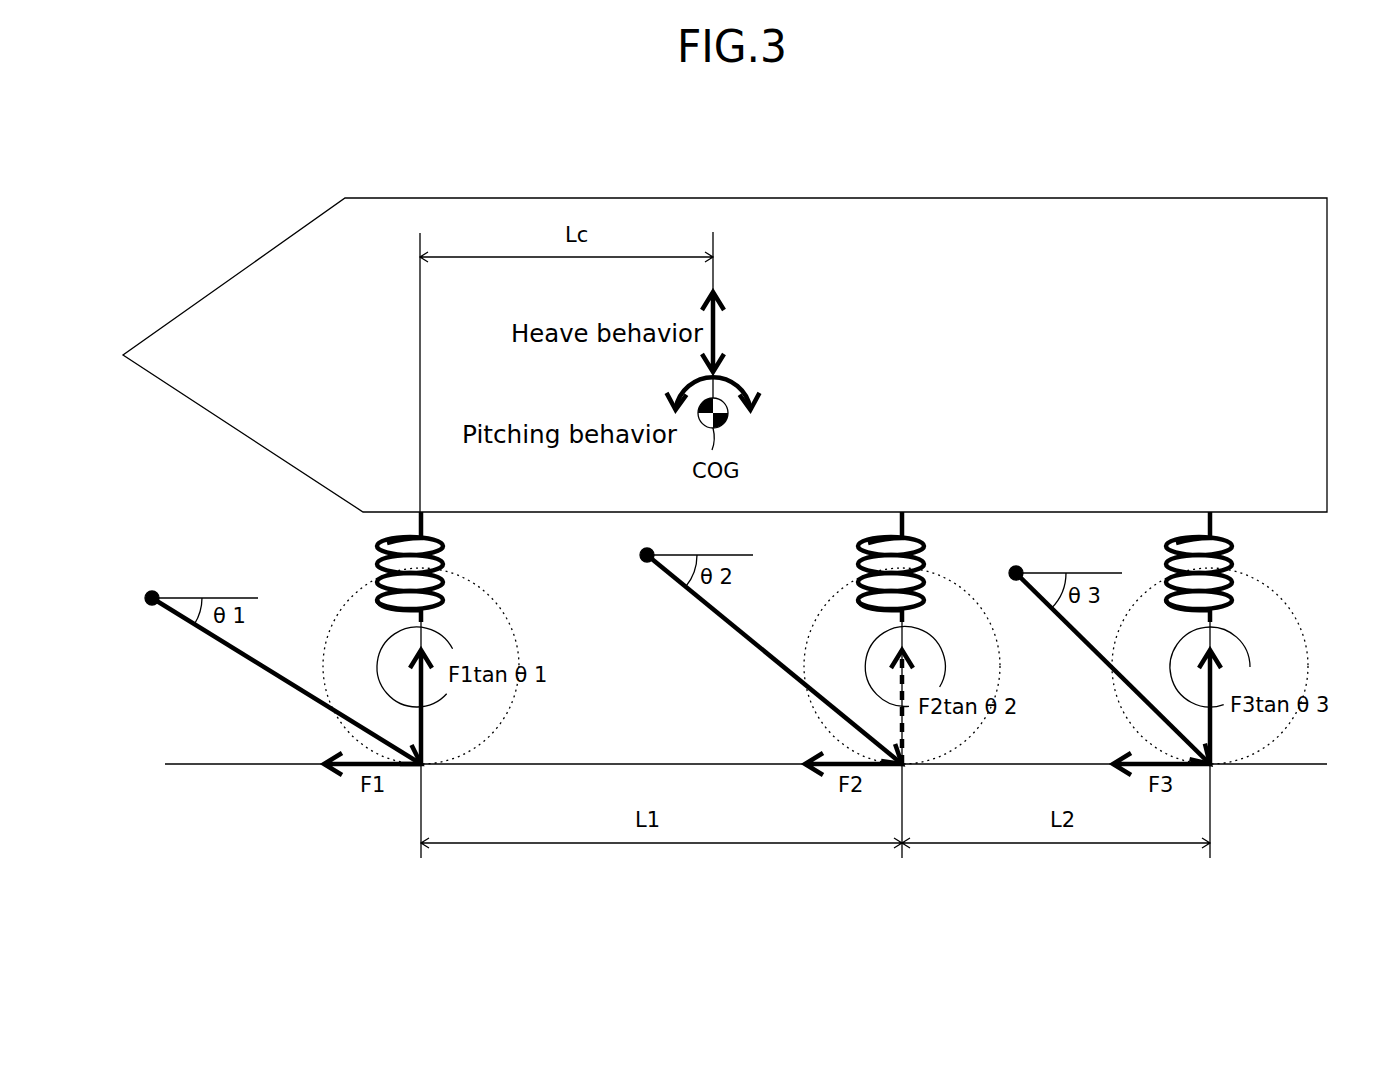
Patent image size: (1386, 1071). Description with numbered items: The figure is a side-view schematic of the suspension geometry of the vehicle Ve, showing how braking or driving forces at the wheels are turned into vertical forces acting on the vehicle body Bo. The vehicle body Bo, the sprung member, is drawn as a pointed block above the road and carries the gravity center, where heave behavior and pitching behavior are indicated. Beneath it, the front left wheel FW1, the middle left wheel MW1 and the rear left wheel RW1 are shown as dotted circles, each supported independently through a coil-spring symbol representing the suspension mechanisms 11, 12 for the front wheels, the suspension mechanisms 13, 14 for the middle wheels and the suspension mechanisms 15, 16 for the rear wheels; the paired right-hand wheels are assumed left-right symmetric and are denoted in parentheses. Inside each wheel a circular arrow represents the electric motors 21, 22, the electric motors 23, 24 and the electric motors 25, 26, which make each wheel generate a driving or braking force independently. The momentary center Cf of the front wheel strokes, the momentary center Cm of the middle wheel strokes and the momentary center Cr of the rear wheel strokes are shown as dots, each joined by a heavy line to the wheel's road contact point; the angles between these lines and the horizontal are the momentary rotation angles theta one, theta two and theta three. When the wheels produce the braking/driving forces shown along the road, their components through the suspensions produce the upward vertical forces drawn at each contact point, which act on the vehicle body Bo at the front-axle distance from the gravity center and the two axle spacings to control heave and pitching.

The vehicle Ve is at (196, 97).
The vehicle body Bo is at (1233, 198).
The momentary center of strokes of the front wheels Cf is at (160, 592).
The momentary center of strokes of the middle wheels Cm is at (655, 549).
The momentary center of strokes of the rear wheels Cr is at (1024, 567).
The suspension mechanism 11 is at (375, 557).
The suspension mechanism 12 is at (350, 567).
The suspension mechanism 13 is at (925, 556).
The suspension mechanism 14 is at (925, 567).
The suspension mechanism 15 is at (1233, 553).
The suspension mechanism 16 is at (1235, 567).
The electric motor 21 is at (457, 650).
The electric motor 22 is at (443, 625).
The electric motor 23 is at (867, 642).
The electric motor 24 is at (864, 632).
The electric motor 25 is at (1252, 666).
The electric motor 26 is at (1267, 632).
The front left wheel FW1 is at (512, 716).
The middle left wheel MW1 is at (999, 668).
The rear left wheel RW1 is at (1288, 722).